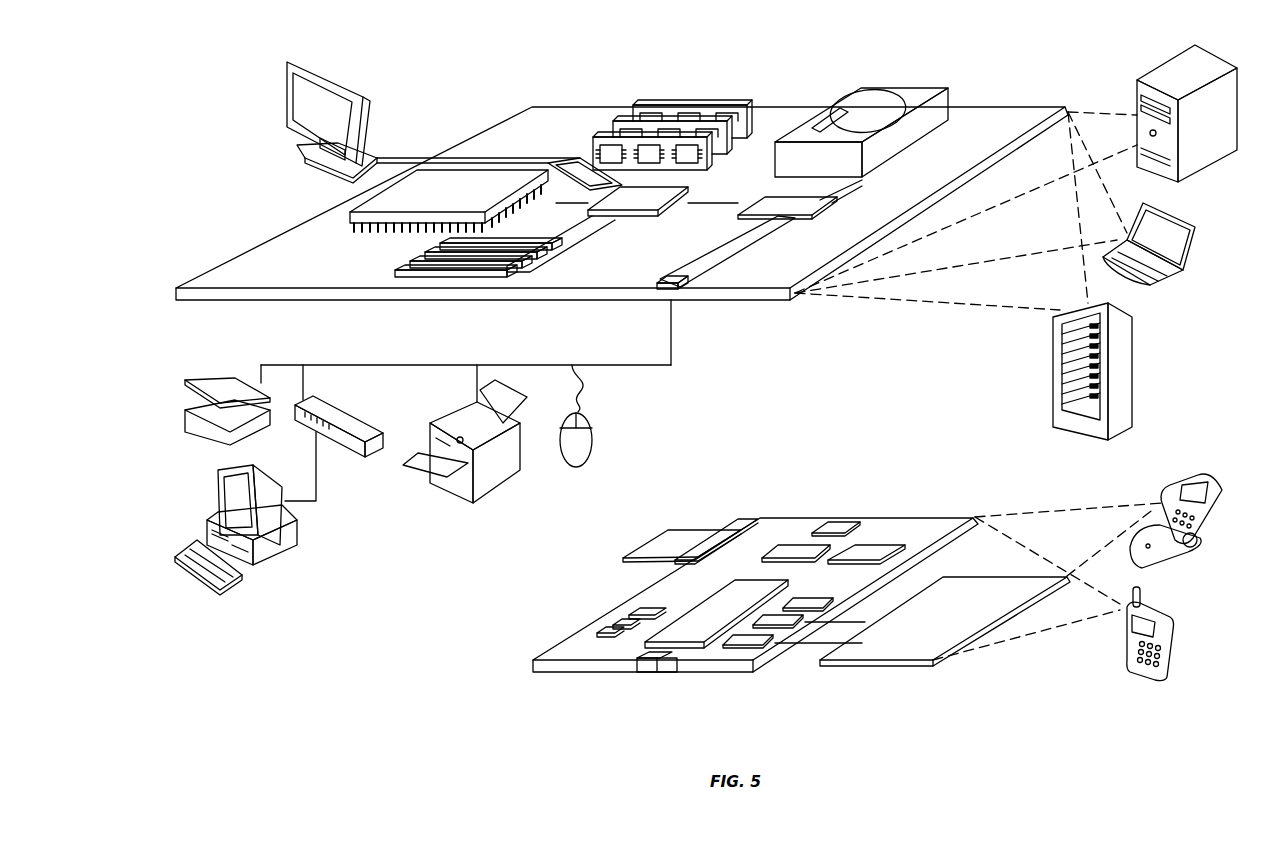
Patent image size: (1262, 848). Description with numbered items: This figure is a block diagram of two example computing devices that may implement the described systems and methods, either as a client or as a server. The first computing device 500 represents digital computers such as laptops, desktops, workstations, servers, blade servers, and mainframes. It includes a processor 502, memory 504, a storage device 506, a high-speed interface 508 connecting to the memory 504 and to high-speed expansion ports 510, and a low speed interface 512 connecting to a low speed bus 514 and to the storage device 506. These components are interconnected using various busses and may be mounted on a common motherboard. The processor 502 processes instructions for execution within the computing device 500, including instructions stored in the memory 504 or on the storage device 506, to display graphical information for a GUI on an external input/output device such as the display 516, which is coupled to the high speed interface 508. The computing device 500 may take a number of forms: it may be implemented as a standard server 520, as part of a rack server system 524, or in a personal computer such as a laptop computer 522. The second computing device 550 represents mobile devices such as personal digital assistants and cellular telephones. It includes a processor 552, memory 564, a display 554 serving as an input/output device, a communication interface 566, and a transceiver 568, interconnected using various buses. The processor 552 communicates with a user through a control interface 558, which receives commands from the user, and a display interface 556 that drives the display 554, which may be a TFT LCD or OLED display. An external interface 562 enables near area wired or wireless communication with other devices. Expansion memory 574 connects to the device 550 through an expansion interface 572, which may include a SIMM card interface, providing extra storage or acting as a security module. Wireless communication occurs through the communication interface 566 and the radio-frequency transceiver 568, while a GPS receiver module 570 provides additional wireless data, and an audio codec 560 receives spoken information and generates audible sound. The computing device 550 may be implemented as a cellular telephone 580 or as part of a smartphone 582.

The computing device 500 is at (463, 82).
The processor 502 is at (352, 213).
The memory 504 is at (640, 112).
The storage device 506 is at (846, 92).
The high-speed interface 508 is at (606, 200).
The high-speed expansion ports 510 is at (395, 270).
The low speed interface 512 is at (762, 203).
The low speed bus 514 is at (677, 289).
The display 516 is at (286, 60).
The standard server 520 is at (1137, 100).
The laptop computer 522 is at (1200, 224).
The rack server system 524 is at (1053, 396).
The computing device 550 is at (512, 672).
The processor 552 is at (692, 645).
The display 554 is at (908, 652).
The display interface 556 is at (752, 650).
The control interface 558 is at (786, 630).
The audio codec 560 is at (806, 612).
The external interface 562 is at (660, 673).
The memory 564 is at (614, 630).
The communication interface 566 is at (798, 546).
The transceiver 568 is at (868, 546).
The GPS receiver module 570 is at (838, 518).
The expansion interface 572 is at (733, 522).
The expansion memory 574 is at (668, 531).
The cellular telephone 580 is at (1162, 490).
The smartphone 582 is at (1126, 646).